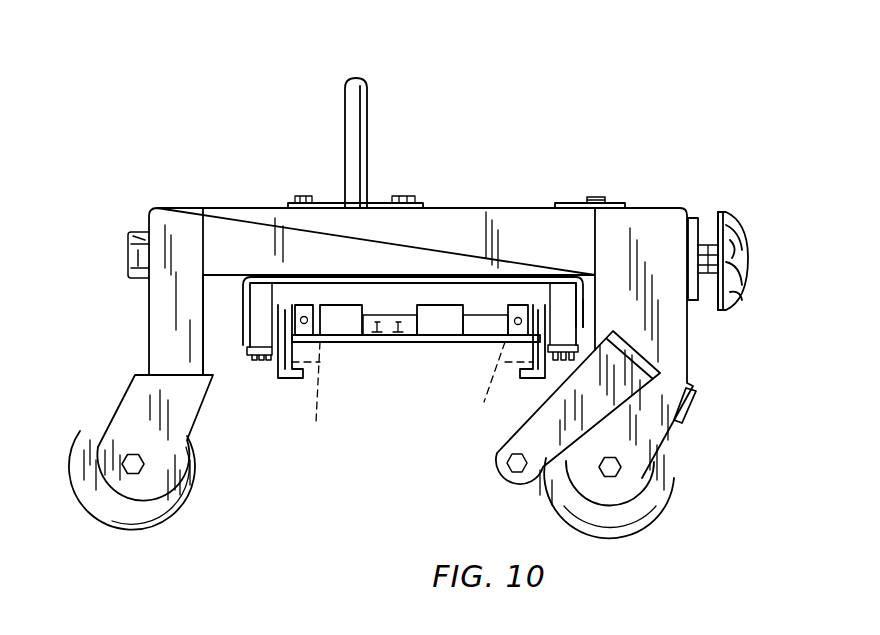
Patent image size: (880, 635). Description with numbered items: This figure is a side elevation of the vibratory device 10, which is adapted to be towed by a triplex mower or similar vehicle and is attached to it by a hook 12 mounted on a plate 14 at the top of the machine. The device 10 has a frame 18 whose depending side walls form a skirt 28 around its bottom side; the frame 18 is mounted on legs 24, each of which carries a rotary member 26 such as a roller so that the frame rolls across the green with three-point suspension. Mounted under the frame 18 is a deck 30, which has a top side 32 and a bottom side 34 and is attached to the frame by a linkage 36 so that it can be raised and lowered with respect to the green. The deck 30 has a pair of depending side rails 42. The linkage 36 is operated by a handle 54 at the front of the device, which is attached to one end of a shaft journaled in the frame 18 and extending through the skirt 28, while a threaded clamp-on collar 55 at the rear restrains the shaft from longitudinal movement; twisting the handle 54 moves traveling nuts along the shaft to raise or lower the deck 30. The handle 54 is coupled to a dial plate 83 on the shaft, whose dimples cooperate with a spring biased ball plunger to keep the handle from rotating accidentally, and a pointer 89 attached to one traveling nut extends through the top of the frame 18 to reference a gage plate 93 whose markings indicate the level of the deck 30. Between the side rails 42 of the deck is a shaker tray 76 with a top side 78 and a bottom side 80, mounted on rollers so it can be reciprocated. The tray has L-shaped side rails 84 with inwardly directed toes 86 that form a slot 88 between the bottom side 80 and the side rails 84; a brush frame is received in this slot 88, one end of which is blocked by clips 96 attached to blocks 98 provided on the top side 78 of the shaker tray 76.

The vibratory device 10 is at (762, 96).
The hook 12 is at (365, 80).
The plate 14 is at (323, 203).
The frame 18 is at (488, 196).
The legs 24 is at (121, 392).
The rotary member 26 is at (188, 500).
The skirt 28 is at (242, 227).
The deck 30 is at (236, 320).
The top side 32 is at (540, 284).
The bottom side 34 is at (530, 297).
The linkage 36 is at (766, 240).
The side rails 42 is at (243, 283).
The handle 54 is at (745, 220).
The clamp-on collar 55 is at (127, 250).
The shaker tray 76 is at (432, 346).
The top side 78 is at (482, 330).
The bottom side 80 is at (350, 344).
The dial plate 83 is at (697, 225).
The side rails 84 is at (279, 375).
The toes 86 is at (290, 380).
The slot 88 is at (394, 347).
The pointer 89 is at (596, 197).
The gage plate 93 is at (623, 203).
The clips 96 is at (492, 412).
The blocks 98 is at (517, 314).